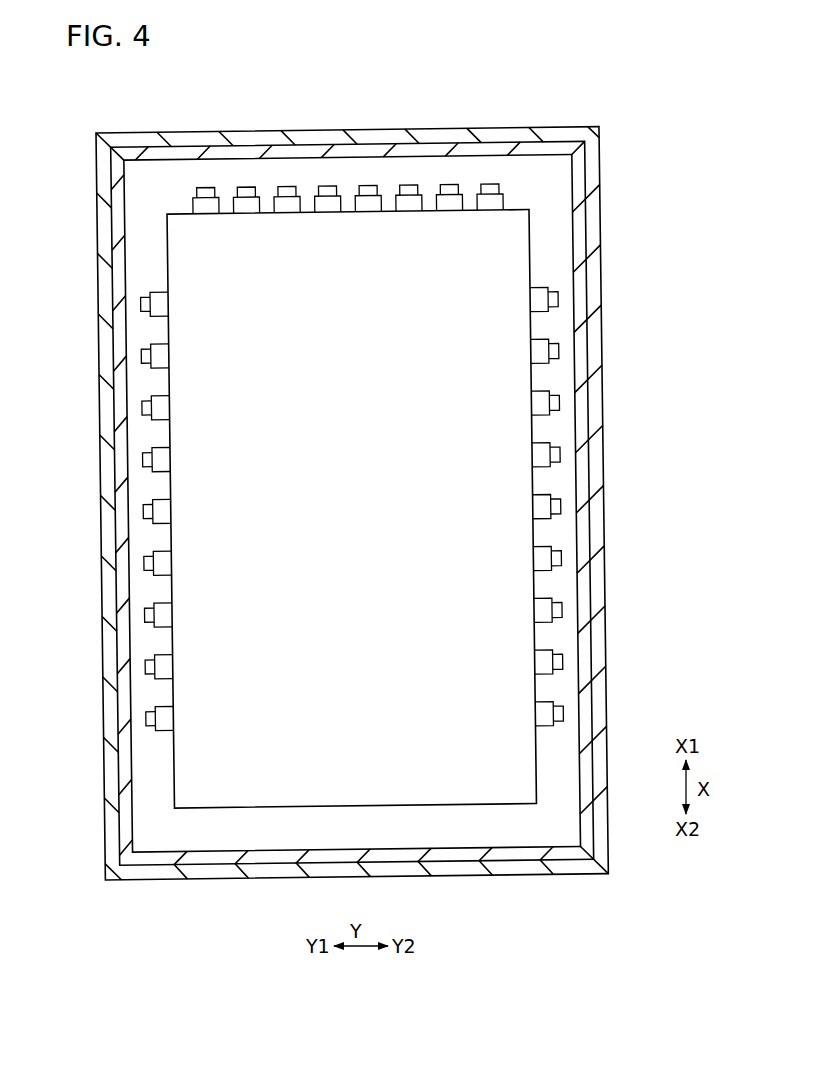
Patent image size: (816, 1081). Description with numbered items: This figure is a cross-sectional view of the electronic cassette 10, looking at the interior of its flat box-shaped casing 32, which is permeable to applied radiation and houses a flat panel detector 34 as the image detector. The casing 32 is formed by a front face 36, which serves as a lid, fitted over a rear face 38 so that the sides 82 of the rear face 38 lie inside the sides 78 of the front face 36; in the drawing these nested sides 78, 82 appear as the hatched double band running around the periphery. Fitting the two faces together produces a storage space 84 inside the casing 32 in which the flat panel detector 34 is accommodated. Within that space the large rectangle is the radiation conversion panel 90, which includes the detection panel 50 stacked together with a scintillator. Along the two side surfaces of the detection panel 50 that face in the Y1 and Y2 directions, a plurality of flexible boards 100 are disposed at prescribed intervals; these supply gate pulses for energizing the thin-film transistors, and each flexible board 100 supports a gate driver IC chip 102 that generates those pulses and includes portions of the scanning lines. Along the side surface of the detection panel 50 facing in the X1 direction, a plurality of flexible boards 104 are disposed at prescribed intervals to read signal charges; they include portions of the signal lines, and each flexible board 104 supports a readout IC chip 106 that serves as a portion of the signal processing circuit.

The electronic cassette 10 is at (335, 72).
The casing 32 is at (608, 124).
The flat panel detector 34 is at (207, 820).
The front face 36 is at (458, 141).
The rear face 38 is at (581, 186).
The detection panel 50 is at (352, 527).
The sides 78 is at (349, 124).
The sides 82 is at (636, 492).
The storage space 84 is at (518, 838).
The radiation conversion panel 90 is at (354, 799).
The flexible boards 100 is at (150, 304).
The gate driver IC chip 102 is at (150, 358).
The flexible boards 104 is at (249, 200).
The readout IC chip 106 is at (205, 188).